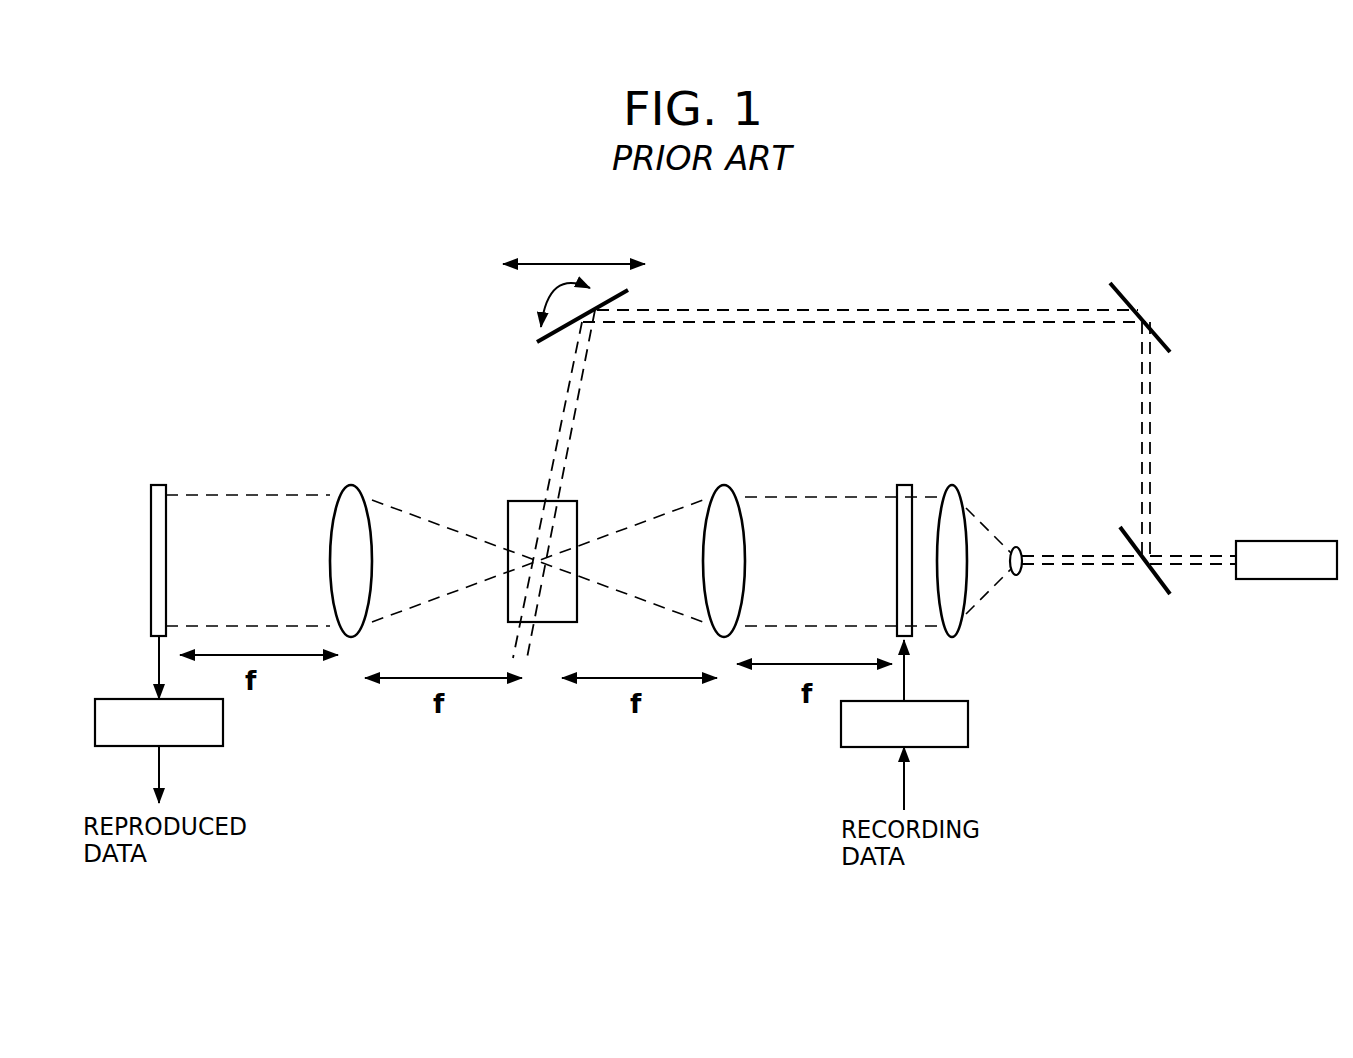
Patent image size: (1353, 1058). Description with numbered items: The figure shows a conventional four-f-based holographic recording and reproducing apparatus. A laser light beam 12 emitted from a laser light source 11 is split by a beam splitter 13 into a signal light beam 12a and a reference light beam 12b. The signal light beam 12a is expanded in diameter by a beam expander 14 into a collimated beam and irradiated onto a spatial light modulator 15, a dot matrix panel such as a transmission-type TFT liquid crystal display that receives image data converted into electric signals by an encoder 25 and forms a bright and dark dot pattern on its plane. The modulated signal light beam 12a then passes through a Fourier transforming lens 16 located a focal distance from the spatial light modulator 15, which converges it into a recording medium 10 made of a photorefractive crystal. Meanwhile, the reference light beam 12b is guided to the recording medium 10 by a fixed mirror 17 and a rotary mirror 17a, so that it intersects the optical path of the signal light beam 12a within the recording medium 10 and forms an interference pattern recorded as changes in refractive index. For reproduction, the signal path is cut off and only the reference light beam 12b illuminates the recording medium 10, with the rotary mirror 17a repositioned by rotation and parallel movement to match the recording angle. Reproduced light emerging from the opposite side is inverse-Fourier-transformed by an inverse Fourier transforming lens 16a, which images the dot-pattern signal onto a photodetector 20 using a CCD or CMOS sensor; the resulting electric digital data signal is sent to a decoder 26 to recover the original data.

The recording medium 10 is at (527, 500).
The laser light source 11 is at (1292, 580).
The laser light beam 12 is at (1215, 567).
The signal light beam 12a is at (1110, 567).
The reference light beam 12b is at (833, 310).
The beam splitter 13 is at (1150, 580).
The beam expander 14 is at (995, 572).
The spatial light modulator 15 is at (903, 486).
The Fourier transforming lens 16 is at (724, 486).
The inverse Fourier transforming lens 16a is at (350, 486).
The fixed mirror 17 is at (1145, 312).
The rotary mirror 17a is at (540, 335).
The photodetector 20 is at (157, 485).
The encoder 25 is at (968, 725).
The decoder 26 is at (223, 722).